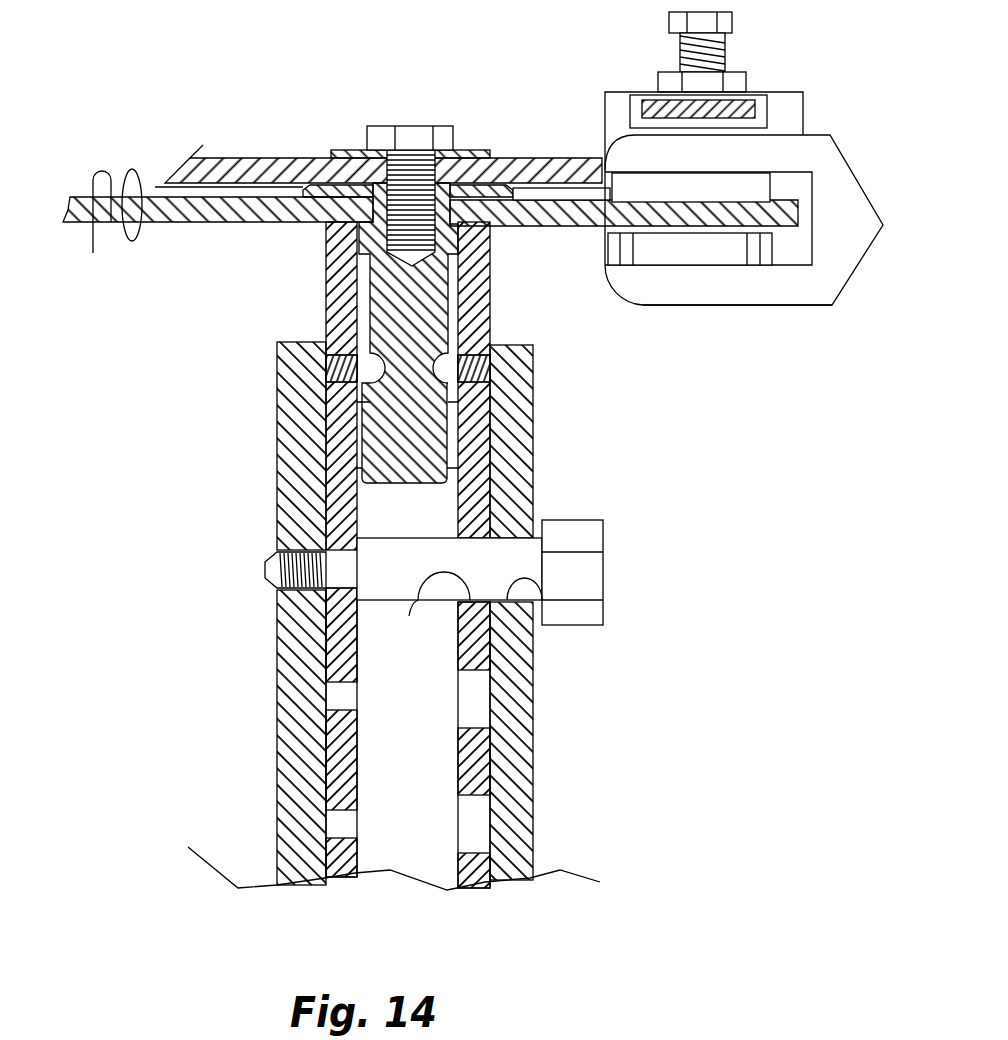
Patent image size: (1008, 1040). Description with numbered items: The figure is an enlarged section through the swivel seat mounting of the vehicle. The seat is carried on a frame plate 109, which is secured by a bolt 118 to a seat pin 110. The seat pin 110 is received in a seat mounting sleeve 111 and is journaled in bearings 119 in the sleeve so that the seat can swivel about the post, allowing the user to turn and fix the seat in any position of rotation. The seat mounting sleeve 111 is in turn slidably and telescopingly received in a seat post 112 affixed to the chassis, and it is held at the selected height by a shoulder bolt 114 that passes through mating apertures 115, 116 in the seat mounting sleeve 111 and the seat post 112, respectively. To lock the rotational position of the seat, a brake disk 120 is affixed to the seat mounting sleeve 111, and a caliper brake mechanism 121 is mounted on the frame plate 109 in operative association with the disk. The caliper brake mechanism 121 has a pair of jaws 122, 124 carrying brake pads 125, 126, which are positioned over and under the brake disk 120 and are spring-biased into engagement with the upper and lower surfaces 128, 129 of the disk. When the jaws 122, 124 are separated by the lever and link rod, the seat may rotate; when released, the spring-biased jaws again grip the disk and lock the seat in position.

The frame plate 109 is at (518, 175).
The seat pin 110 is at (425, 308).
The seat mounting sleeve 111 is at (473, 420).
The seat post 112 is at (515, 450).
The shoulder bolt 114 is at (583, 575).
The aperture 115 is at (542, 602).
The aperture 116 is at (467, 700).
The bolt 118 is at (412, 125).
The bearings 119 is at (335, 238).
The brake disk 120 is at (183, 212).
The caliper brake mechanism 121 is at (815, 308).
The jaw 122 is at (740, 157).
The jaw 124 is at (703, 290).
The brake pad 125 is at (733, 193).
The brake pad 126 is at (643, 247).
The upper surface 128 is at (78, 228).
The lower surface 129 is at (142, 190).